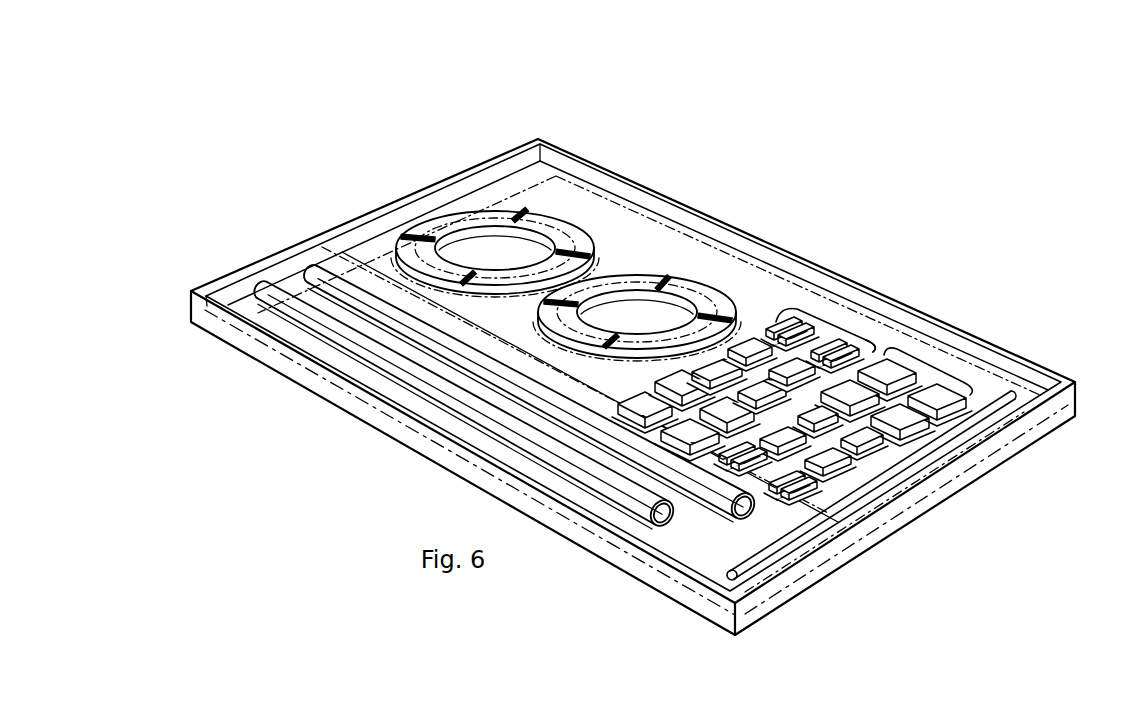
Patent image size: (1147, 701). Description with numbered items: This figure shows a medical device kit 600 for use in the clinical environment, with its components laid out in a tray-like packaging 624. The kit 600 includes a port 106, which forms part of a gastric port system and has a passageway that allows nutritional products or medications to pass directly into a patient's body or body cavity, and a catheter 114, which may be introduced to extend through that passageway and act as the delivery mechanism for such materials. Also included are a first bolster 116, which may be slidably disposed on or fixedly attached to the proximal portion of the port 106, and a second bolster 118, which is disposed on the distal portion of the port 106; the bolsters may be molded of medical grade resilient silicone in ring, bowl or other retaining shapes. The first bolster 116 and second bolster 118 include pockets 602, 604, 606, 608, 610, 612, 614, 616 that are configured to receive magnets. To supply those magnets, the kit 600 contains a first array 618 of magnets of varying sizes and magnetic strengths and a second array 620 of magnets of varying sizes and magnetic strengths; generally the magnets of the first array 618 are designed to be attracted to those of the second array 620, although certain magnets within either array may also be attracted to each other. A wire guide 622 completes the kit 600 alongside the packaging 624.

The medical device kit 600 is at (846, 108).
The port 106 is at (283, 292).
The catheter 114 is at (340, 287).
The first bolster 116 is at (510, 212).
The second bolster 118 is at (612, 341).
The pocket 602 is at (522, 214).
The pocket 604 is at (612, 277).
The pocket 606 is at (472, 274).
The pocket 608 is at (425, 238).
The pocket 610 is at (717, 316).
The pocket 612 is at (838, 320).
The pocket 614 is at (663, 282).
The pocket 616 is at (565, 301).
The first array of magnets 618 is at (850, 322).
The second array of magnets 620 is at (940, 368).
The wire guide 622 is at (1013, 388).
The packaging 624 is at (970, 424).